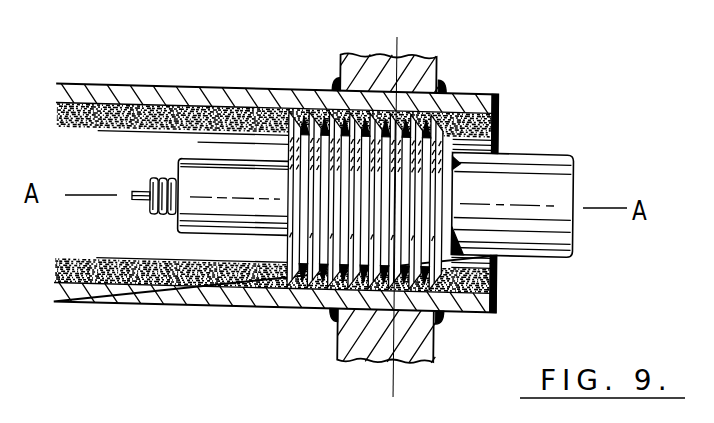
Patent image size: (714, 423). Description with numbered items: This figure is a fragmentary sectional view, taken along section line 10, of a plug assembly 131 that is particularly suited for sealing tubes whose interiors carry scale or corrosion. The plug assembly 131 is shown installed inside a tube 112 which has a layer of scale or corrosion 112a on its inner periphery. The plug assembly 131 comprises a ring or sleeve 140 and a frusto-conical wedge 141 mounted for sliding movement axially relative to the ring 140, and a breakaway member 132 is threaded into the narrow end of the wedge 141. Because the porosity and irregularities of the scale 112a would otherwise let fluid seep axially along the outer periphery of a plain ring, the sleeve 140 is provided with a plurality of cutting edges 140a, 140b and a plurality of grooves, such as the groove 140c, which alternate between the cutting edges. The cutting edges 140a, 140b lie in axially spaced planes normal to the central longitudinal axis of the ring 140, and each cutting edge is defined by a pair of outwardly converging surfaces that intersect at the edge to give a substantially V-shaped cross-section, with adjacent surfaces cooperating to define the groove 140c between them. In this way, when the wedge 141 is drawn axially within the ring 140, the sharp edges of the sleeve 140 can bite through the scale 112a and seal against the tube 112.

The section line 10- 10 is at (397, 37).
The tube 112 is at (157, 289).
The layer of scale or corrosion 112a is at (230, 266).
The plug assembly 131 is at (510, 127).
The breakaway member 132 is at (153, 208).
The ring or sleeve 140 is at (305, 236).
The cutting edge 140a is at (408, 298).
The cutting edge 140b is at (452, 312).
The groove 140c is at (440, 318).
The wedge 141 is at (548, 167).